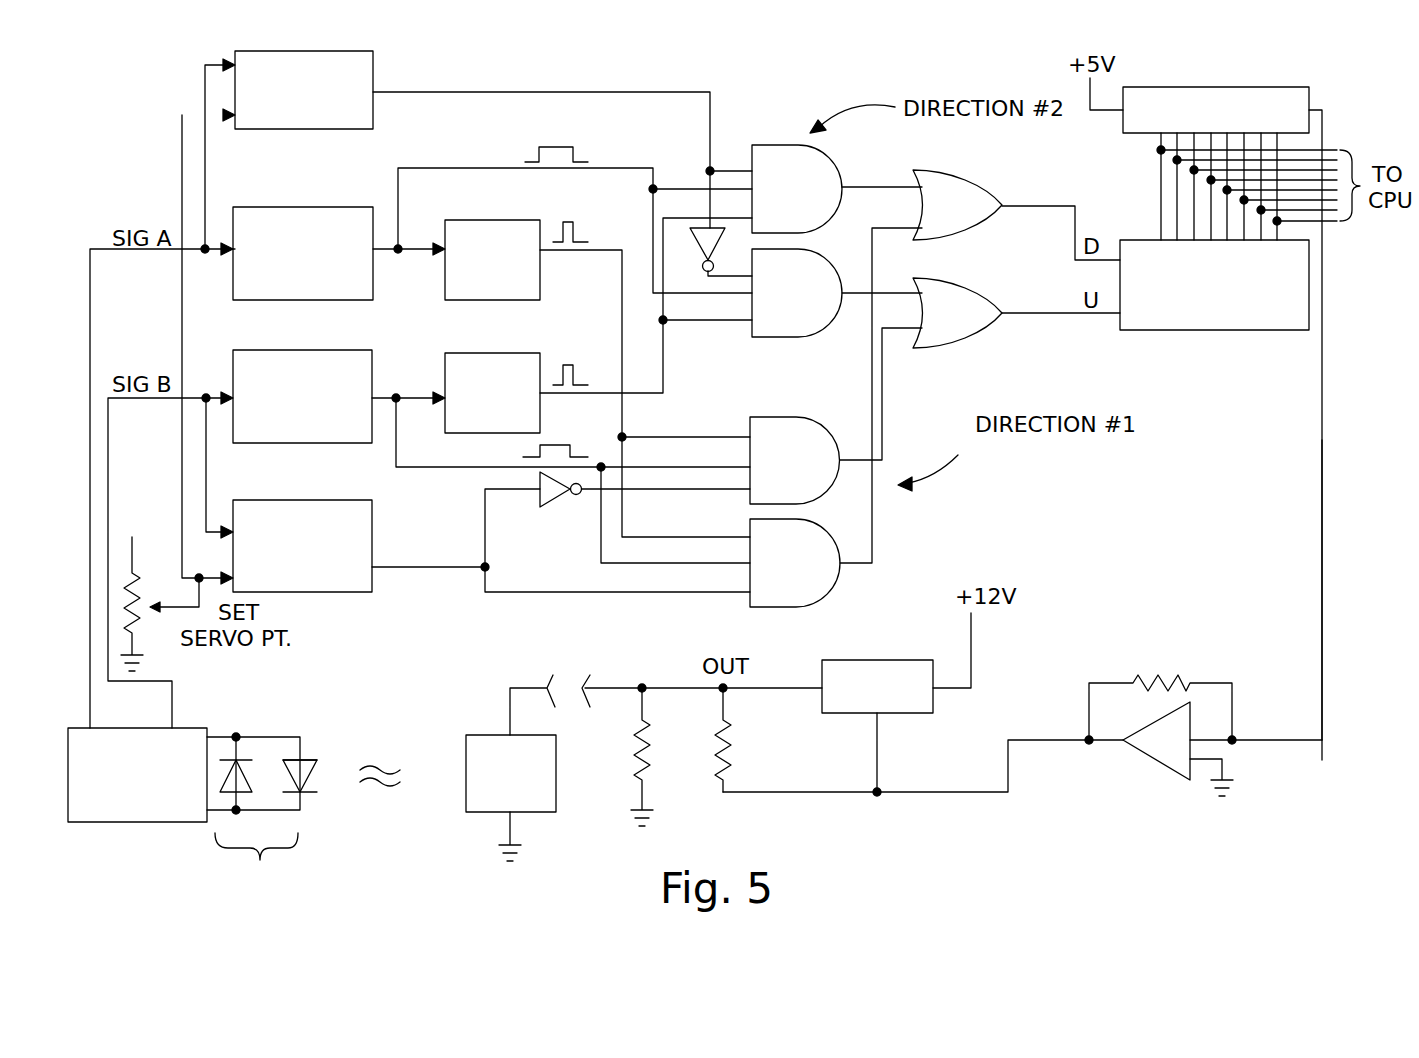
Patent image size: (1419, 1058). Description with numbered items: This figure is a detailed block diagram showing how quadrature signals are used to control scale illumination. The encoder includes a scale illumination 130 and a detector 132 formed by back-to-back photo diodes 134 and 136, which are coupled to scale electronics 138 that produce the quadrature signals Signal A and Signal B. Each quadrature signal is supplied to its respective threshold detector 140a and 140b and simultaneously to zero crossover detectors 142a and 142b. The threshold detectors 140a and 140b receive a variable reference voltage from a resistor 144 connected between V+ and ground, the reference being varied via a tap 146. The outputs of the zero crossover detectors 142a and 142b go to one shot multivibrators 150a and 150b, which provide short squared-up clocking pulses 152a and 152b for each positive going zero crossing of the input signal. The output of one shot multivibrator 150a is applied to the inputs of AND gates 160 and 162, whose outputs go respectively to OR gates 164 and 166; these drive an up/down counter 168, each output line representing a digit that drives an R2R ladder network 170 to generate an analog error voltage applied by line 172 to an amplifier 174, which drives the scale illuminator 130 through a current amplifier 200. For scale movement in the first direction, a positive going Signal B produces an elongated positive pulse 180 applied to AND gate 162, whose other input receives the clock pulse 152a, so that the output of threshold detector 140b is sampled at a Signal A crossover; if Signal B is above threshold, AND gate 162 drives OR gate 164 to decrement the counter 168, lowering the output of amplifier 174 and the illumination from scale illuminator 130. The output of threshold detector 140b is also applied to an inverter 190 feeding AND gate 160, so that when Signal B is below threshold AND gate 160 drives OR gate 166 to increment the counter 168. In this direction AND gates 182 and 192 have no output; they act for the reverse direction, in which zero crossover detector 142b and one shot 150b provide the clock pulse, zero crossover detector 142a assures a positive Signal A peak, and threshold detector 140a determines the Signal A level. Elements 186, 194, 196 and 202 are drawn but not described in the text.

The scale illumination 130 is at (470, 735).
The detector 132 is at (303, 816).
The photo diode 134 is at (256, 775).
The photo diode 136 is at (320, 765).
The scale electronics 138 is at (148, 822).
The threshold detector 140a is at (385, 63).
The threshold detector 140b is at (340, 488).
The zero crossover detector 142a is at (310, 207).
The zero crossover detector 142b is at (345, 340).
The resistor 144 is at (160, 572).
The tap 146 is at (180, 608).
The one shot multivibrator 150a is at (517, 204).
The one shot multivibrator 150b is at (517, 340).
The clocking pulse 152a is at (573, 237).
The clocking pulse 152b is at (573, 380).
The AND gate 160 is at (805, 485).
The AND gate 162 is at (816, 590).
The OR gate 164 is at (976, 216).
The OR gate 166 is at (975, 325).
The up/down counter 168 is at (1195, 330).
The R2R ladder network 170 is at (1222, 87).
The line 172 is at (1320, 442).
The amplifier 174 is at (1141, 757).
The elongated positive pulse 180 is at (565, 445).
The AND gate 182 is at (808, 215).
The resistor 186 is at (730, 728).
The inverter 190 is at (562, 500).
The AND gate 192 is at (800, 325).
The inverter 194 is at (697, 248).
The pulse 196 is at (562, 138).
The current amplifier 200 is at (920, 648).
The resistor 202 is at (645, 745).